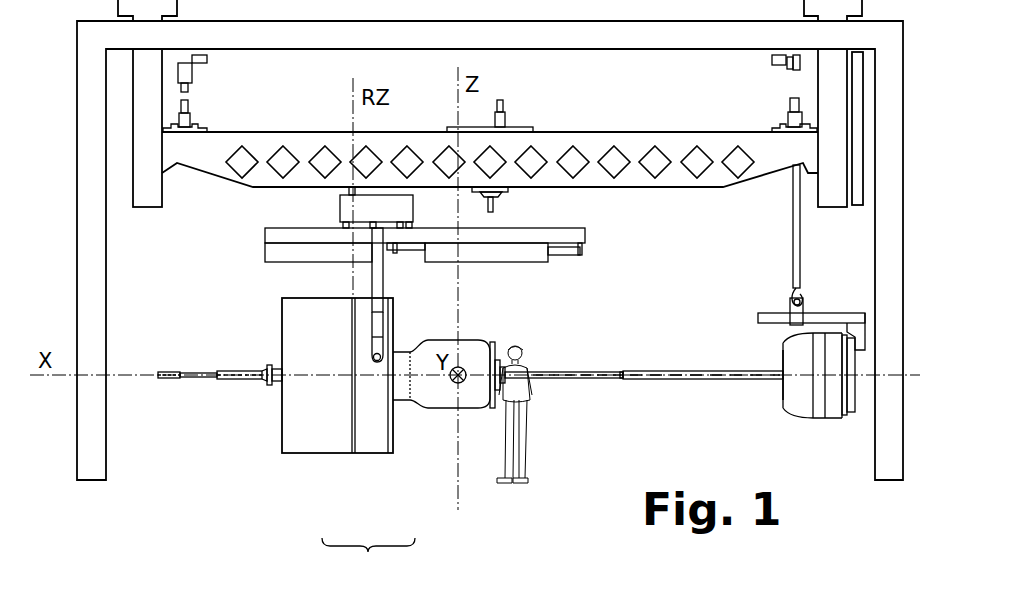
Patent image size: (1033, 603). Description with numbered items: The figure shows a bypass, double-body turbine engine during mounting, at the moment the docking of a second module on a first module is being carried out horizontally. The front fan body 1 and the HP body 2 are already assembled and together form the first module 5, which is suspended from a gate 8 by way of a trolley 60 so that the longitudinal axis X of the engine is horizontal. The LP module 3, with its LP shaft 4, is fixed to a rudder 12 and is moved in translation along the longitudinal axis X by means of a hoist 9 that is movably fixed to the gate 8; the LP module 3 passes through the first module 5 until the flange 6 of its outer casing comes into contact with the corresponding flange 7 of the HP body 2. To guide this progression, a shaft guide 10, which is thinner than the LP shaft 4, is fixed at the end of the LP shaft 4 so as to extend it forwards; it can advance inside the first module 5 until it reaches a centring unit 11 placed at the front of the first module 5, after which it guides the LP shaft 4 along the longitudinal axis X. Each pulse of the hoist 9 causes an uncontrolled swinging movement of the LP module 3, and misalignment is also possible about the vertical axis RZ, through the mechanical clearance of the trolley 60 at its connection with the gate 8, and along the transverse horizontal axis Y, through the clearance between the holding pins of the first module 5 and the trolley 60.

The front fan body 1 is at (317, 407).
The HP body 2 is at (437, 387).
The LP module 3 is at (802, 392).
The LP shaft 4 is at (727, 372).
The first module 5 is at (368, 559).
The flange 6 is at (782, 395).
The flange 7 is at (490, 412).
The gate 8 is at (93, 110).
The hoist 9 is at (792, 262).
The shaft guide 10 is at (565, 370).
The centring unit 11 is at (263, 362).
The rudder 12 is at (823, 317).
The trolley 60 is at (280, 236).